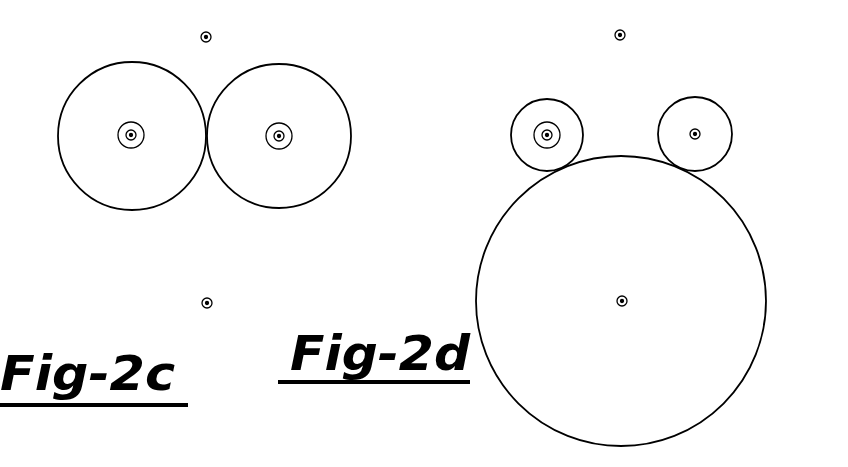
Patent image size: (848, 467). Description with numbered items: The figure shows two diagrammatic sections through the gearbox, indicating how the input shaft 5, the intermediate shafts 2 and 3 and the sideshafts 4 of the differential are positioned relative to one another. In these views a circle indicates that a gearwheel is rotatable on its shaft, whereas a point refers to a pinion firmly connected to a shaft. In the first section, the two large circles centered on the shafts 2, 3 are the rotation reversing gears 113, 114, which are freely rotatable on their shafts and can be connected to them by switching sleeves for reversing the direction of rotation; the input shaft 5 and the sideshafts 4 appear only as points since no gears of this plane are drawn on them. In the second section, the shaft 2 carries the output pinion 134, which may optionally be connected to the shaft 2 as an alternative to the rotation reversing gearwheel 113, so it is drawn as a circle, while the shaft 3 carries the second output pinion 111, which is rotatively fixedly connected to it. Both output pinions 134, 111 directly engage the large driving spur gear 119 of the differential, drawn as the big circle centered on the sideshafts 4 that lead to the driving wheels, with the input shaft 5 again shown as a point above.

In FIG. 2C, the rotation reversing gear 113 is at (108, 62).
In FIG. 2C, the rotation reversing gear 114 is at (314, 67).
In FIG. 2D, the output pinion 134 is at (537, 99).
In FIG. 2D, the second output pinion 111 is at (713, 101).
In FIG. 2D, the driving spur gear 119 is at (768, 258).
In FIG. 2C, the shaft 2 is at (140, 136).
In FIG. 2D, the shaft 2 is at (555, 136).
In FIG. 2C, the shaft 3 is at (287, 137).
In FIG. 2D, the shaft 3 is at (705, 134).
In FIG. 2C, the sideshafts 4 is at (217, 303).
In FIG. 2D, the sideshafts 4 is at (632, 301).
In FIG. 2C, the input shaft 5 is at (216, 37).
In FIG. 2D, the input shaft 5 is at (631, 37).